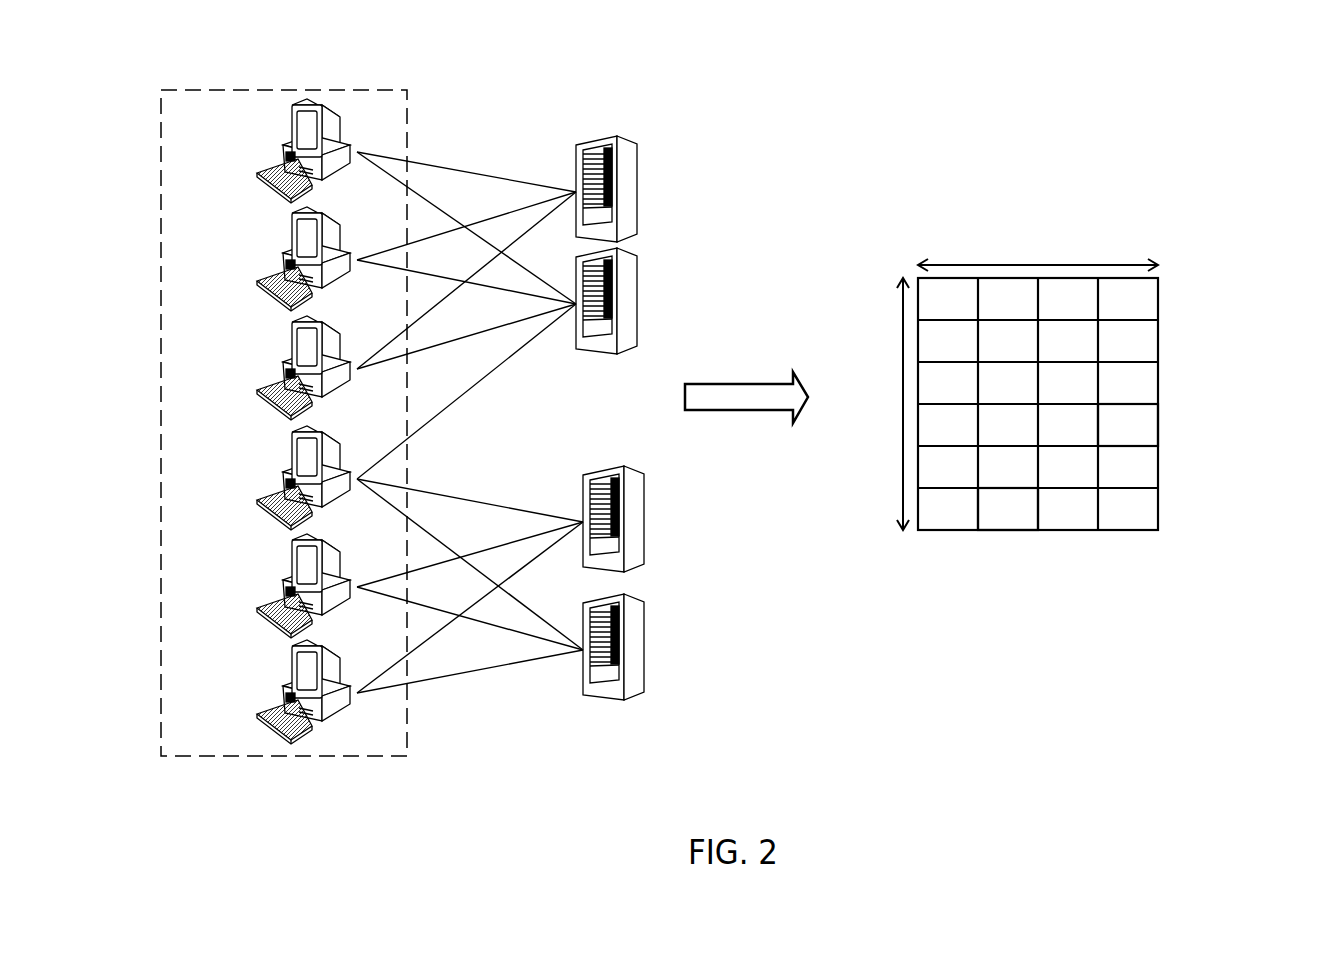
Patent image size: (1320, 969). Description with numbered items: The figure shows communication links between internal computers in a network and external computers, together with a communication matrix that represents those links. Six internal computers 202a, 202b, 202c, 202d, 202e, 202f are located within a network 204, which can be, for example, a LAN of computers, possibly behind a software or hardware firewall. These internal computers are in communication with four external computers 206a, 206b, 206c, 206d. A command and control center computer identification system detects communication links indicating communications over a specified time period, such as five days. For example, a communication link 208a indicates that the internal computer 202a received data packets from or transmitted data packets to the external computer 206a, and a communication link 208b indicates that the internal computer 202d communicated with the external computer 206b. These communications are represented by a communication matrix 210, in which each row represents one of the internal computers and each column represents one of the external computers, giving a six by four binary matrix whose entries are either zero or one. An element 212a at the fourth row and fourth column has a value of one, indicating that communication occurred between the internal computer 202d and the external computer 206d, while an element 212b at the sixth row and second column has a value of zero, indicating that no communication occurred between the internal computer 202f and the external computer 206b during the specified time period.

The internal computer 202a is at (283, 143).
The internal computer 202b is at (283, 252).
The internal computer 202c is at (283, 361).
The internal computer 202d is at (283, 471).
The internal computer 202e is at (283, 579).
The internal computer 202f is at (283, 685).
The network 204 is at (263, 90).
The external computer 206a is at (637, 190).
The external computer 206b is at (637, 303).
The external computer 206c is at (644, 520).
The external computer 206d is at (644, 648).
The communication link 208a is at (452, 165).
The communication link 208b is at (450, 403).
The communication matrix 210 is at (1158, 298).
The element 212a is at (1122, 413).
The element 212b is at (1003, 510).